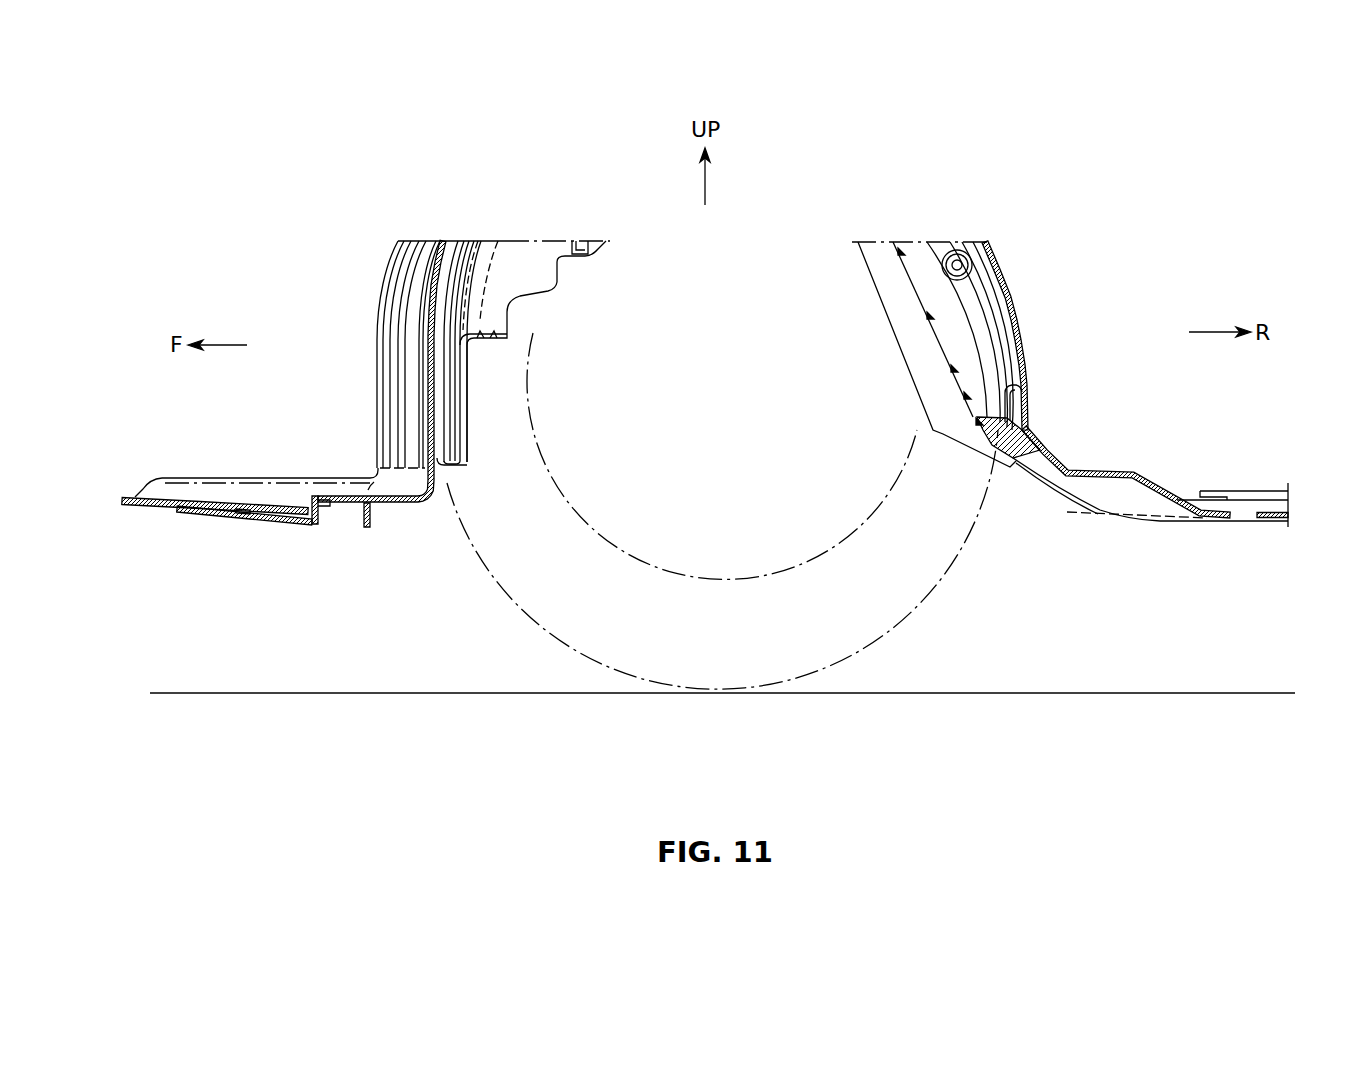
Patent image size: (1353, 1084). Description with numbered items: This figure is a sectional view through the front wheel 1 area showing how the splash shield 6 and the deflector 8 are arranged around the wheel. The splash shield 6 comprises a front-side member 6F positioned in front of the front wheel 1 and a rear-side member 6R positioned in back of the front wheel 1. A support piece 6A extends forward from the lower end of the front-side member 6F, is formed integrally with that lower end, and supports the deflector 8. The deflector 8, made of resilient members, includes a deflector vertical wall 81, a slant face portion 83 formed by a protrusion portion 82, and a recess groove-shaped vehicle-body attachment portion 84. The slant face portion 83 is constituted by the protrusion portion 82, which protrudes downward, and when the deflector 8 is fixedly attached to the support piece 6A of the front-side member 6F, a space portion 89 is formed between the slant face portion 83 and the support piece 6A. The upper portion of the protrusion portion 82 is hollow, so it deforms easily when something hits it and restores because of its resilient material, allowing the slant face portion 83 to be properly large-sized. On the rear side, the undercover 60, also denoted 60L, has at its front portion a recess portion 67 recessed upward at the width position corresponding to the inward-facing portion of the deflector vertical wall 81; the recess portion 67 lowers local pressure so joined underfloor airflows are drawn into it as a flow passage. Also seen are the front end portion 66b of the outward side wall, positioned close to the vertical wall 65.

The front wheel 1 is at (530, 618).
The splash shield 6 is at (378, 296).
The front-side member 6F is at (377, 337).
The support piece 6A is at (253, 477).
The rear-side member 6R is at (1005, 283).
The deflector 8 is at (163, 512).
The protrusion portion 82 is at (187, 511).
The slant face portion 83 is at (245, 515).
The space portion 89 is at (246, 509).
The vehicle-body attachment portion 84 is at (337, 511).
The deflector vertical wall 81 is at (373, 513).
The recess portion 67 is at (1118, 500).
The front end portion 66b is at (1145, 503).
The vertical wall 65 is at (1245, 505).
The undercover 60 is at (1233, 488).
The undercover 60L is at (1244, 495).